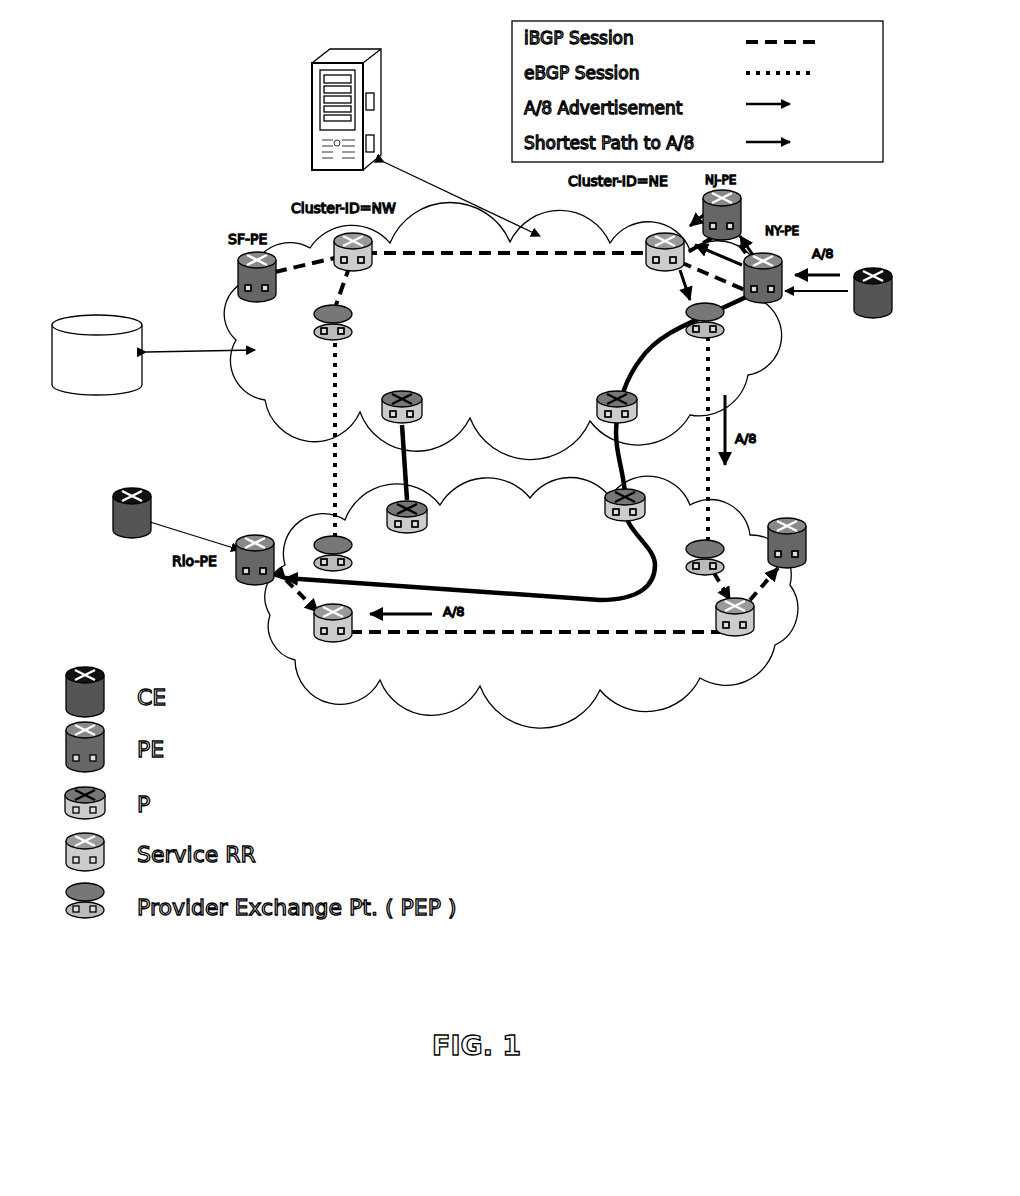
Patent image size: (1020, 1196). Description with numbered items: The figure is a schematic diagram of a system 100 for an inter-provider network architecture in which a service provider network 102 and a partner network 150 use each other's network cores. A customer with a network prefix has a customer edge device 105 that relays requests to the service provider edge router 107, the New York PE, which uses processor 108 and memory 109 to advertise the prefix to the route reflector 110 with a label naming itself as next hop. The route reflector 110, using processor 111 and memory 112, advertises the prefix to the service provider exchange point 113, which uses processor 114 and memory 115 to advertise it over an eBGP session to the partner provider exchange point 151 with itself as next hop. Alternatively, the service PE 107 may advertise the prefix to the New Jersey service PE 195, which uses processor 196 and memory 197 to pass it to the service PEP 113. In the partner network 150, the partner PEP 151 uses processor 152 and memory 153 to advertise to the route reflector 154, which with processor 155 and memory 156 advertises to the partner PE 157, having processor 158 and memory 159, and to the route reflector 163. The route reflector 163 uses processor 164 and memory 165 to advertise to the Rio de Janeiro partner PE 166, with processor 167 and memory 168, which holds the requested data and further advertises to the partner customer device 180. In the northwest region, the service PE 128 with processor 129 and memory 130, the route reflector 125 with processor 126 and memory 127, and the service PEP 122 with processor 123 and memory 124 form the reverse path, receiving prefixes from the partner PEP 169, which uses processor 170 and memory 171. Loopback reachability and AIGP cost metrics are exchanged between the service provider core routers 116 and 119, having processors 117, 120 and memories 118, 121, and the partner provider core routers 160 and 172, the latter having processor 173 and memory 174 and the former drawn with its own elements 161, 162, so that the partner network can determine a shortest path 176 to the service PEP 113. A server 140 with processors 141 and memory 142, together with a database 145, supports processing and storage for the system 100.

The system 100 is at (515, 836).
The service provider network 102 is at (502, 330).
The customer edge device 105 is at (871, 268).
The service provider edge router 107 is at (773, 261).
The processor 108 is at (757, 293).
The memory 109 is at (774, 293).
The route reflector 110 is at (650, 242).
The processor 111 is at (657, 263).
The memory 112 is at (671, 263).
The service provider exchange point 113 is at (690, 312).
The processor 114 is at (708, 332).
The memory 115 is at (717, 332).
The service provider core router 116 is at (605, 395).
The processor 117 is at (607, 419).
The memory 118 is at (630, 419).
The service provider core router 119 is at (402, 397).
The processor 120 is at (391, 419).
The memory 121 is at (416, 419).
The service provider exchange point 122 is at (314, 318).
The processor 123 is at (326, 336).
The memory 124 is at (345, 331).
The route reflector 125 is at (370, 246).
The processor 126 is at (345, 263).
The memory 127 is at (362, 263).
The service provider edge router 128 is at (240, 262).
The processor 129 is at (245, 293).
The memory 130 is at (265, 293).
The server 140 is at (312, 84).
The processors 141 is at (376, 142).
The memory 142 is at (376, 102).
The database 145 is at (97, 355).
The partner network 150 is at (521, 693).
The partner provider exchange point 151 is at (712, 548).
The processor 152 is at (693, 568).
The memory 153 is at (718, 568).
The route reflector 154 is at (755, 615).
The processor 155 is at (730, 630).
The memory 156 is at (745, 628).
The partner provider edge router 157 is at (800, 520).
The processor 158 is at (782, 560).
The memory 159 is at (800, 557).
The partner provider core router 160 is at (606, 496).
The interface of provider router 161 is at (615, 518).
The interface of provider router 162 is at (640, 515).
The route reflector 163 is at (315, 634).
The processor 164 is at (324, 638).
The memory 165 is at (343, 636).
The partner provider edge router 166 is at (255, 535).
The processor 167 is at (246, 575).
The memory 168 is at (263, 578).
The partner provider exchange point 169 is at (320, 538).
The processor 170 is at (320, 555).
The memory 171 is at (346, 568).
The partner provider core router 172 is at (425, 507).
The processor 173 is at (405, 530).
The memory 174 is at (422, 528).
The shortest path 176 is at (527, 590).
The partner customer device 180 is at (132, 497).
The service provider edge router 195 is at (740, 210).
The processor 196 is at (705, 226).
The memory 197 is at (735, 226).